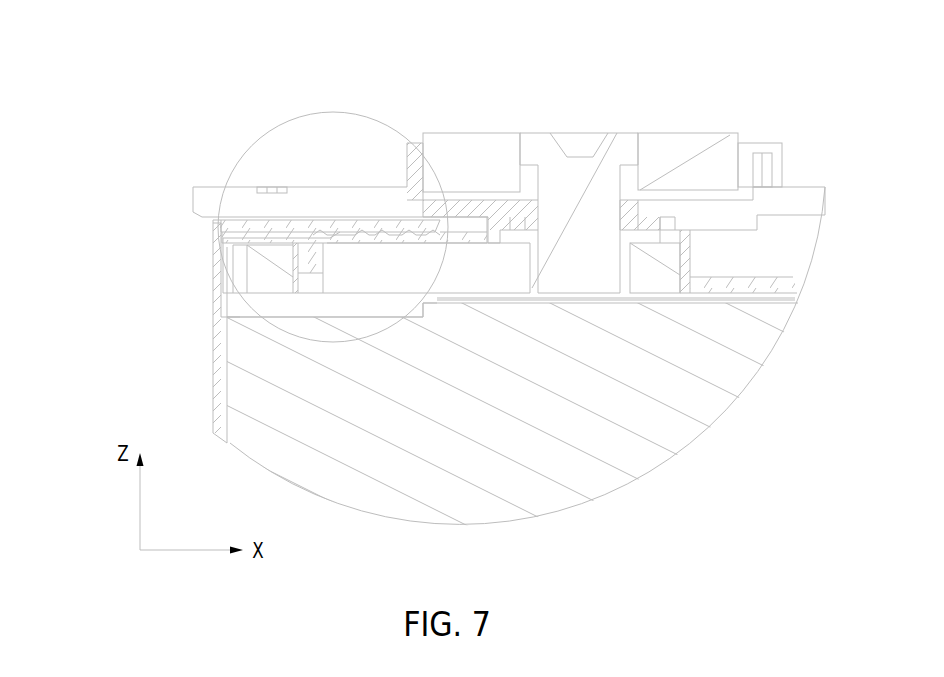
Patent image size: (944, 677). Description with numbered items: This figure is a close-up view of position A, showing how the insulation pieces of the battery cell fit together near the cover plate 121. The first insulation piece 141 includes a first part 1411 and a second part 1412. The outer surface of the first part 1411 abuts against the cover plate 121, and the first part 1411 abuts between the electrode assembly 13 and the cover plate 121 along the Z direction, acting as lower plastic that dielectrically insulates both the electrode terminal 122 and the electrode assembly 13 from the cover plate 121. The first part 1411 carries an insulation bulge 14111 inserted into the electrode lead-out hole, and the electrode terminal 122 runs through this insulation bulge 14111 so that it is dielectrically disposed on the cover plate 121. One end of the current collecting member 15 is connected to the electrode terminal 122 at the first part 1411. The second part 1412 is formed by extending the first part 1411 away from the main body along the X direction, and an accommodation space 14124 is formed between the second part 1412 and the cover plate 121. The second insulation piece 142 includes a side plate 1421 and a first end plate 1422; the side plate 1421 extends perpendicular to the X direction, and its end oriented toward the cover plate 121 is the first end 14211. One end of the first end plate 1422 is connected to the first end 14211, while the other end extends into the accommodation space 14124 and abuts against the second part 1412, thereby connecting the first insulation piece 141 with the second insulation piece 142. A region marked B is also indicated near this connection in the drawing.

The electrode assembly 13 is at (652, 416).
The current collecting member 15 is at (537, 178).
The cover plate 121 is at (245, 200).
The electrode terminal 122 is at (606, 182).
The first insulation piece 141 is at (452, 82).
The first part 1411 is at (497, 200).
The second part 1412 is at (340, 240).
The accommodation space 14124 is at (291, 212).
The insulation bulge 14111 is at (640, 228).
The second insulation piece 142 is at (120, 237).
The side plate 1421 is at (220, 317).
The first end plate 1422 is at (216, 227).
The first end 14211 is at (206, 211).
The position A is at (470, 24).
The region B is at (273, 336).